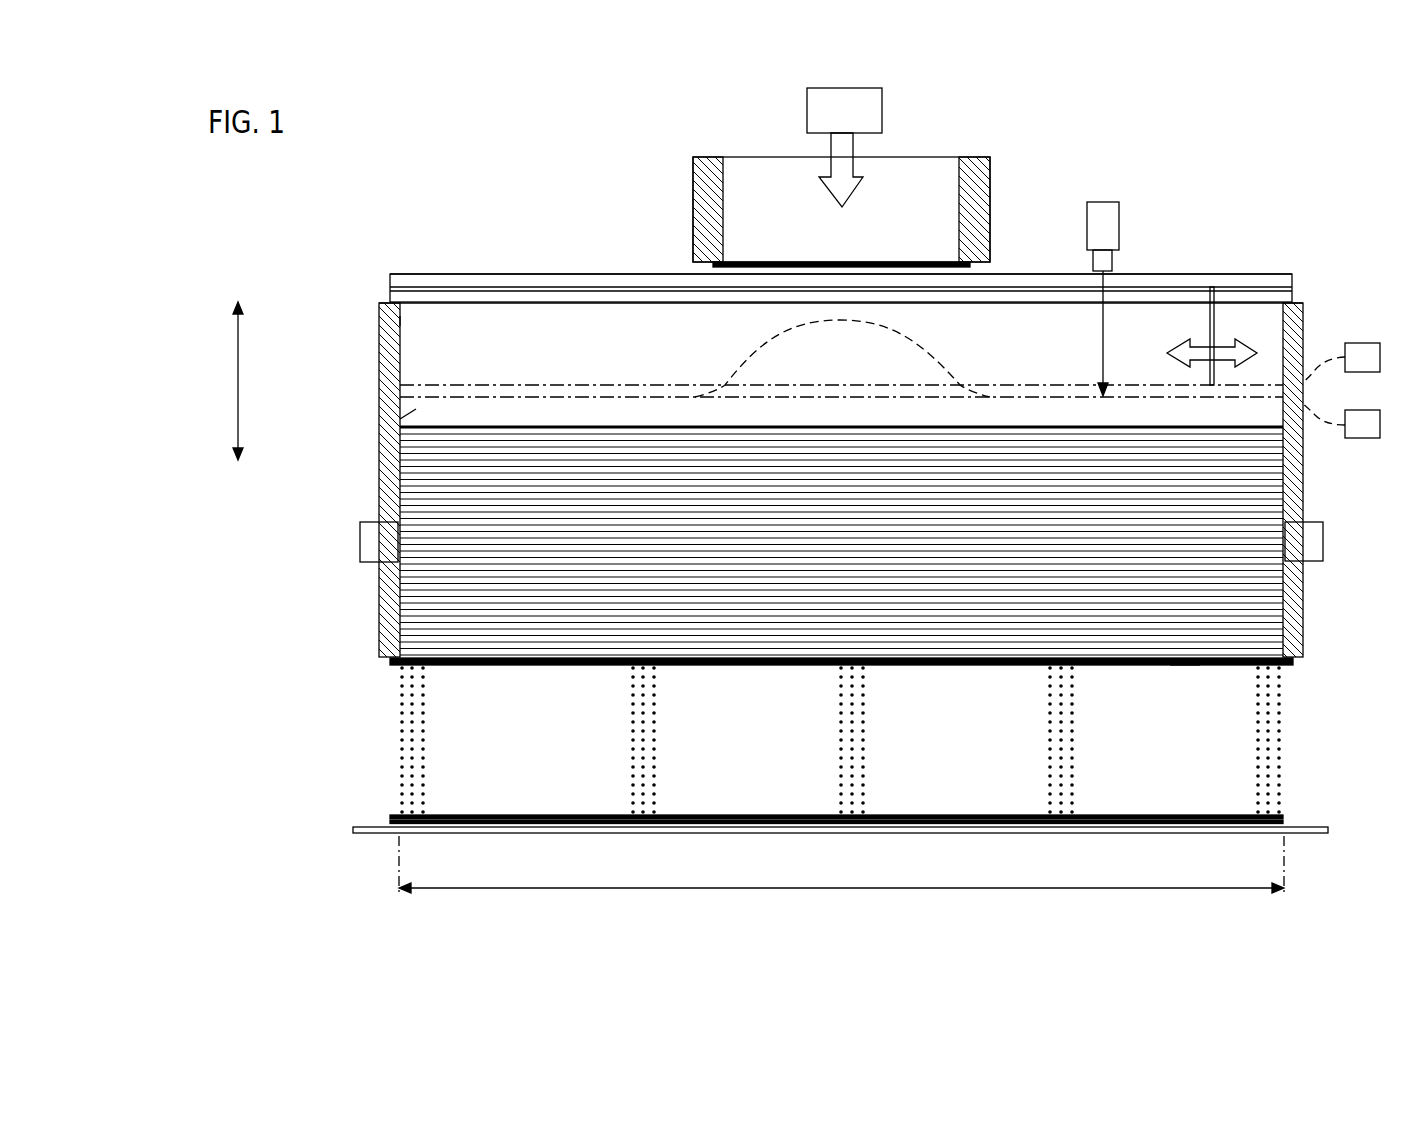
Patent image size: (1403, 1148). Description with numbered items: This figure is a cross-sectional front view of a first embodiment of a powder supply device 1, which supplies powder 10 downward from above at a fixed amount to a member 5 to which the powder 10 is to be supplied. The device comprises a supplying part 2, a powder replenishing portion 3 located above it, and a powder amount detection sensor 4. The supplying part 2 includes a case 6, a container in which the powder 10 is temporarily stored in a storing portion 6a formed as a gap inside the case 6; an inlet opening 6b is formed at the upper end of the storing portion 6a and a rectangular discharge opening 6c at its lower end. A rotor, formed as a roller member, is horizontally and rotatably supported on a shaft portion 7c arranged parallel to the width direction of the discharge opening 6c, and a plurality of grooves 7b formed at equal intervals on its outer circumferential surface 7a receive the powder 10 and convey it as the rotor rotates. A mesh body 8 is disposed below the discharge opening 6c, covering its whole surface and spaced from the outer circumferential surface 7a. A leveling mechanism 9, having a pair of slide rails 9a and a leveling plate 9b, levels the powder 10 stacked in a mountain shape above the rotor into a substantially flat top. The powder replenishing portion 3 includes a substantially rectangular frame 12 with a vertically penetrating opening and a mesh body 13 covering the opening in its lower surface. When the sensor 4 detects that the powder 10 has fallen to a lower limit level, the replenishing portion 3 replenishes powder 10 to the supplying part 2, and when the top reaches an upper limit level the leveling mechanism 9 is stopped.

The powder supply device 1 is at (373, 214).
The supplying part 2 is at (345, 397).
The powder replenishing portion 3 is at (677, 202).
The powder amount detection sensor 4 is at (1119, 226).
The member to which the powder is to be supplied 5 is at (372, 827).
The case 6 is at (378, 607).
The storing portion 6a is at (380, 410).
The inlet opening 6b is at (400, 322).
The discharge opening 6c is at (1185, 670).
The outer circumferential surface 7a is at (564, 427).
The grooves 7b is at (594, 603).
The shaft portion 7c is at (372, 522).
The mesh body 8 is at (390, 664).
The leveling mechanism 9 is at (378, 280).
The slide rails 9a is at (1262, 279).
The leveling plate 9b is at (1210, 323).
The powder 10 is at (884, 110).
The frame 12 is at (990, 203).
The mesh body 13 is at (970, 265).